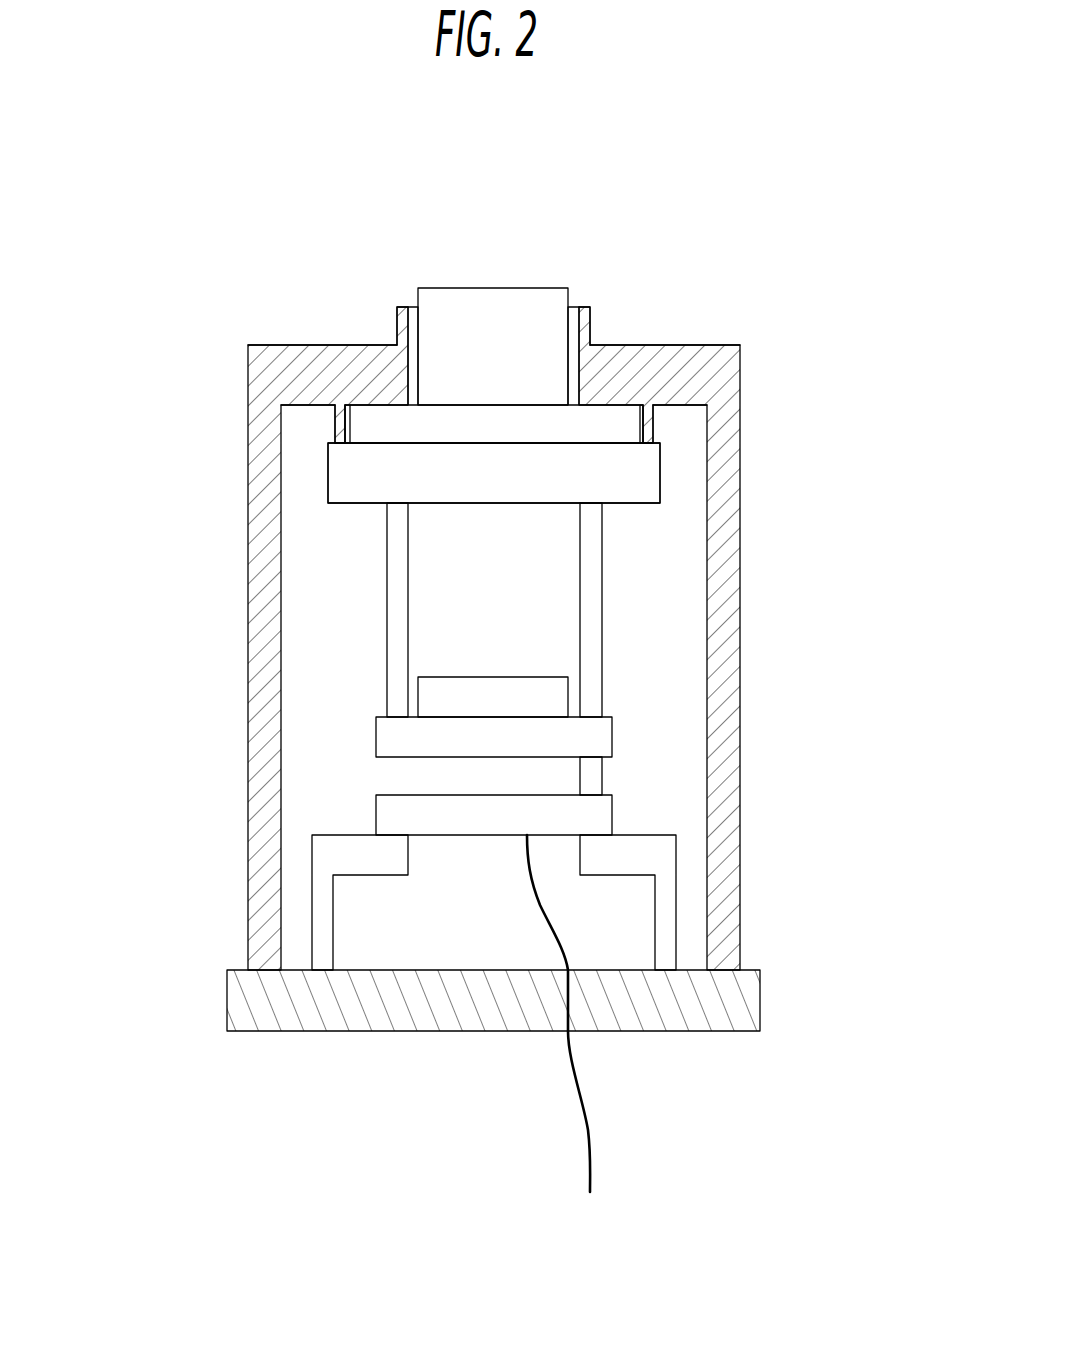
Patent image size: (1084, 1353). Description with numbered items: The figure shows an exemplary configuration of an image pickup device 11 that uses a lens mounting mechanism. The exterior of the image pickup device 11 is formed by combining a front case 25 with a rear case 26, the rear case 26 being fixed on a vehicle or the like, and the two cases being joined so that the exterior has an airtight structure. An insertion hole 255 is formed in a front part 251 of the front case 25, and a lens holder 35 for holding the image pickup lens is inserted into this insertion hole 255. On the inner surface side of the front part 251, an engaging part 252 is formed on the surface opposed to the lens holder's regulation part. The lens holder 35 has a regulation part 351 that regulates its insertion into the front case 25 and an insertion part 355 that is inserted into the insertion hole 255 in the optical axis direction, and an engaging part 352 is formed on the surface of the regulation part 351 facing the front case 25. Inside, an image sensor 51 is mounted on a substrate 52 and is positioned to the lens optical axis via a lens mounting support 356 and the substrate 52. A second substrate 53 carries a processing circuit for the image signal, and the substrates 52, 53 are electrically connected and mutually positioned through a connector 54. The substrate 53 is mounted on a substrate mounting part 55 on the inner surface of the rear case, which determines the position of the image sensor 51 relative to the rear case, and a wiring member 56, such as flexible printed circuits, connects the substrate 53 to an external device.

The image pickup device 11 is at (517, 1290).
The front case 25 is at (258, 627).
The front part 251 is at (297, 345).
The engaging part 252 is at (333, 426).
The insertion hole 255 is at (412, 307).
The rear case 26 is at (262, 1015).
The lens holder 35 is at (662, 505).
The regulation part 351 is at (650, 467).
The engaging part 352 is at (615, 425).
The insertion part 355 is at (530, 330).
The lens mounting support 356 is at (393, 557).
The image sensor 51 is at (558, 698).
The substrate 52 is at (600, 739).
The substrate 53 is at (600, 815).
The connector 54 is at (588, 776).
The substrate mounting part 55 is at (665, 913).
The wiring member 56 is at (590, 1145).